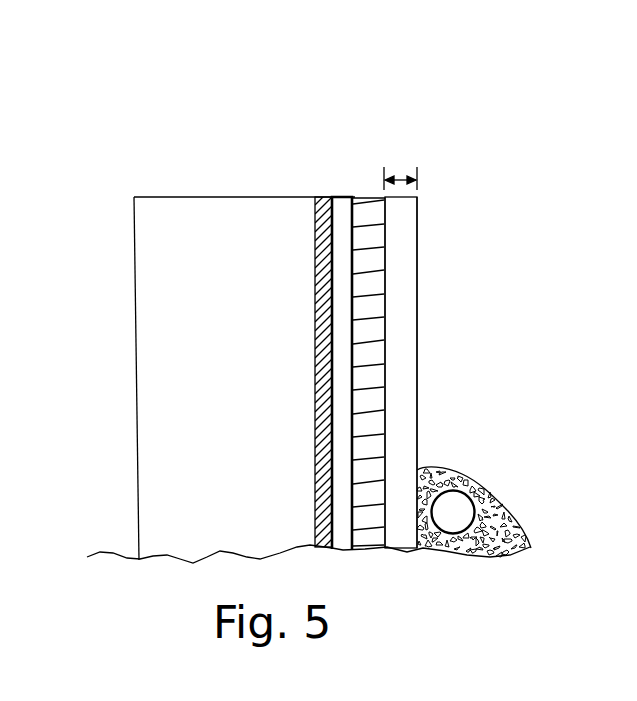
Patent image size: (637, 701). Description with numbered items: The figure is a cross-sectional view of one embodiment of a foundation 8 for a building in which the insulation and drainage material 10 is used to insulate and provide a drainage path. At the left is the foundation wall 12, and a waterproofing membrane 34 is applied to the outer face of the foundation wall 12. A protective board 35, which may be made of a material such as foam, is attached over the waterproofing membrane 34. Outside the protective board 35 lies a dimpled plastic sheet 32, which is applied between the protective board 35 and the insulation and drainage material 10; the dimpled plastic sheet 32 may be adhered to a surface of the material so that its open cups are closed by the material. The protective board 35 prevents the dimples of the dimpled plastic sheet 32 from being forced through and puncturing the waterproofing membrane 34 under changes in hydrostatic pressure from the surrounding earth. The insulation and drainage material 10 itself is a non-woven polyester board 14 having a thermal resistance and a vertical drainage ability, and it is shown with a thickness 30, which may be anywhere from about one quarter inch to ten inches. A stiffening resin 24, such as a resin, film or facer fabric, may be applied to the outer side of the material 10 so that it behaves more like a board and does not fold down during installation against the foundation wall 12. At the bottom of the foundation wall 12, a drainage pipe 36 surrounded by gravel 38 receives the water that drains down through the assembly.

The foundation 8 is at (169, 68).
The insulation and drainage material 10 is at (454, 372).
The foundation wall 12 is at (168, 320).
The non-woven polyester board 14 is at (402, 264).
The stiffening resin 24 is at (403, 392).
The thickness 30 is at (403, 178).
The dimpled plastic sheet 32 is at (366, 197).
The waterproofing membrane 34 is at (323, 195).
The protective board 35 is at (337, 196).
The drainage pipe 36 is at (500, 503).
The gravel 38 is at (459, 458).